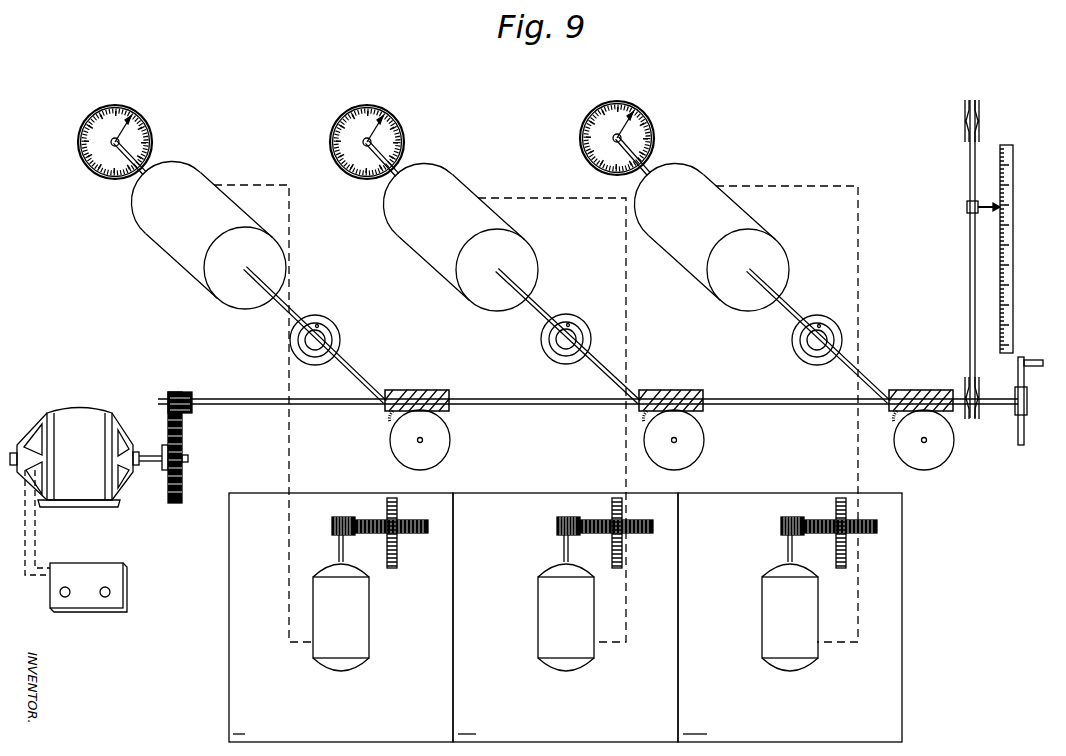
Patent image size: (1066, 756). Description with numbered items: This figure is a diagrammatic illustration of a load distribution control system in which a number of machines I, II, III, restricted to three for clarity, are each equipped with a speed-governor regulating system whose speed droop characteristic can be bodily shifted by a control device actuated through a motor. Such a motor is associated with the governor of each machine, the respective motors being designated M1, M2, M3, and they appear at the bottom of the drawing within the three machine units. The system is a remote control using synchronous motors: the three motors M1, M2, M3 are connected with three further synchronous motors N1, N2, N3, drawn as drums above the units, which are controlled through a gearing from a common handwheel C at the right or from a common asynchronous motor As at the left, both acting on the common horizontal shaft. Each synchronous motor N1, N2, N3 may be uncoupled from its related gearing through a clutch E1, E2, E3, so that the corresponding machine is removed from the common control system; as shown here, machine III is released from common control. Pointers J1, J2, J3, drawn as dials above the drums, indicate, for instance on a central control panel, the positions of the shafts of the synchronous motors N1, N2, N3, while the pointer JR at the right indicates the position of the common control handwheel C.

The pointer J1 is at (150, 134).
The pointer J2 is at (341, 116).
The pointer J3 is at (654, 118).
The synchronous motor N1 is at (176, 268).
The synchronous motor N2 is at (430, 271).
The synchronous motor N3 is at (692, 280).
The clutch E1 is at (341, 336).
The clutch E2 is at (541, 339).
The clutch E3 is at (792, 343).
The asynchronous motor As is at (84, 412).
The pointer JR is at (1018, 248).
The handwheel C is at (1018, 452).
The motor M1 is at (370, 584).
The motor M2 is at (595, 584).
The motor M3 is at (819, 584).
The machine I is at (239, 724).
The machine II is at (467, 724).
The machine III is at (695, 724).